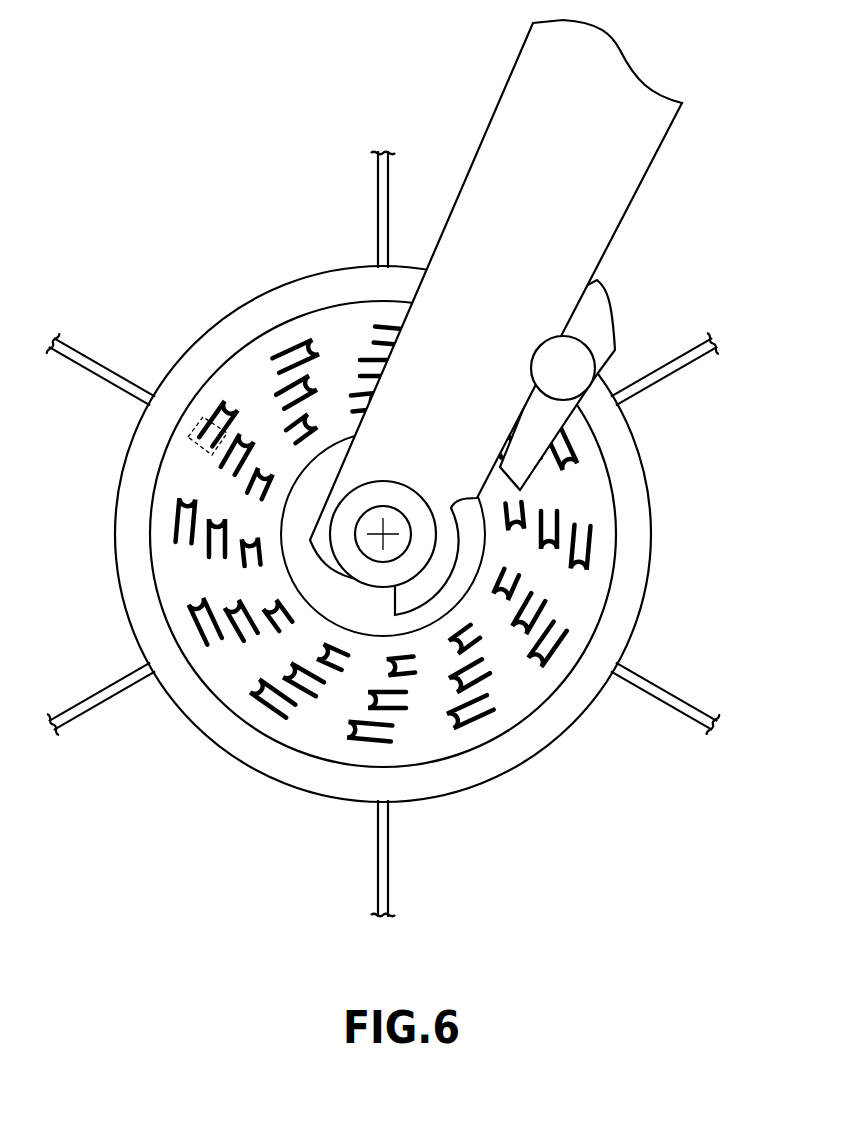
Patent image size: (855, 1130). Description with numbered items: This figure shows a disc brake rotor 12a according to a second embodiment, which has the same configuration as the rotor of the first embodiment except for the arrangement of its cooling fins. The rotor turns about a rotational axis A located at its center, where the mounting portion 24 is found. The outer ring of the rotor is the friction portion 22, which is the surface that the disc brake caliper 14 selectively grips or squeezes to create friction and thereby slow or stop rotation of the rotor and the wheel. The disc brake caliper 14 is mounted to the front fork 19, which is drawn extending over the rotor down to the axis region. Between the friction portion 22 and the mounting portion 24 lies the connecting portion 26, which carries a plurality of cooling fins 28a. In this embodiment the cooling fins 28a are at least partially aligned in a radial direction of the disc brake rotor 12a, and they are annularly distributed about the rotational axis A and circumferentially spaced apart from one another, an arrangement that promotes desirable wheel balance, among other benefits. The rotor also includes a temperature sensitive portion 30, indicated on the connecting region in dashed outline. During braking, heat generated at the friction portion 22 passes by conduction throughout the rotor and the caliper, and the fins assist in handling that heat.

The disc brake rotor 12a is at (653, 512).
The disc brake caliper 14 is at (598, 318).
The front fork 19 is at (517, 123).
The friction portion 22 is at (202, 353).
The mounting portion 24 is at (343, 610).
The connecting portion 26 is at (255, 655).
The cooling fins 28a is at (293, 357).
The temperature sensitive portion 30 is at (188, 442).
The rotational axis A is at (388, 528).